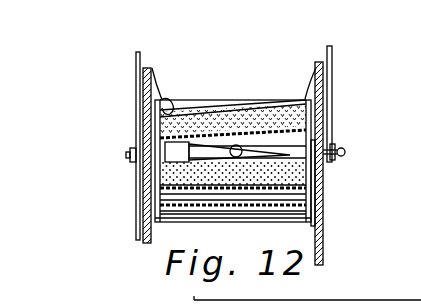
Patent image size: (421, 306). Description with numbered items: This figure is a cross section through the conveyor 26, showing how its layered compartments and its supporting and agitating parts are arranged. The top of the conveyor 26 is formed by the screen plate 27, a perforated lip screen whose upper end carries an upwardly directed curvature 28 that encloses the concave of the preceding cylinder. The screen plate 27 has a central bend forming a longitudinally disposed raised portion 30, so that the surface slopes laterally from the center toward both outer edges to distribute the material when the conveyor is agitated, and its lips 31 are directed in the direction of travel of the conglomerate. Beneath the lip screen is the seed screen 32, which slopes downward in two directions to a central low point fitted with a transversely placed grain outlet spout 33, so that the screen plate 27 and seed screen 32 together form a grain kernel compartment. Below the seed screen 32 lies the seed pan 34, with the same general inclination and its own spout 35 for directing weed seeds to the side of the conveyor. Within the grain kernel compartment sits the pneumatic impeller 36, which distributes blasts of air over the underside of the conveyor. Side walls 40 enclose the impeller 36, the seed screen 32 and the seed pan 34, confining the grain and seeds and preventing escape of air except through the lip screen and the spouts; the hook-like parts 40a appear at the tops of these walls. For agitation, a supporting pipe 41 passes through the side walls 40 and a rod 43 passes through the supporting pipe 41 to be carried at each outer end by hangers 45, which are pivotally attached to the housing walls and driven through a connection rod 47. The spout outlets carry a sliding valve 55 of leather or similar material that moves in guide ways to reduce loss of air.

The conveyor 26 is at (206, 100).
The screen plate 27 is at (250, 112).
The upwardly directed curvature 28 is at (266, 104).
The raised portion 30 is at (236, 120).
The lips 31 is at (191, 118).
The seed screen 32 is at (233, 173).
The grain outlet spout 33 is at (228, 192).
The seed pan 34 is at (262, 202).
The spout 35 is at (290, 208).
The pneumatic impeller 36 is at (258, 152).
The side walls 40 is at (172, 100).
The hook 40a is at (156, 72).
The supporting pipe 41 is at (177, 162).
The rod 43 is at (128, 158).
The hangers 45 is at (332, 100).
The connection rod 47 is at (336, 300).
The sliding valve 55 is at (324, 198).